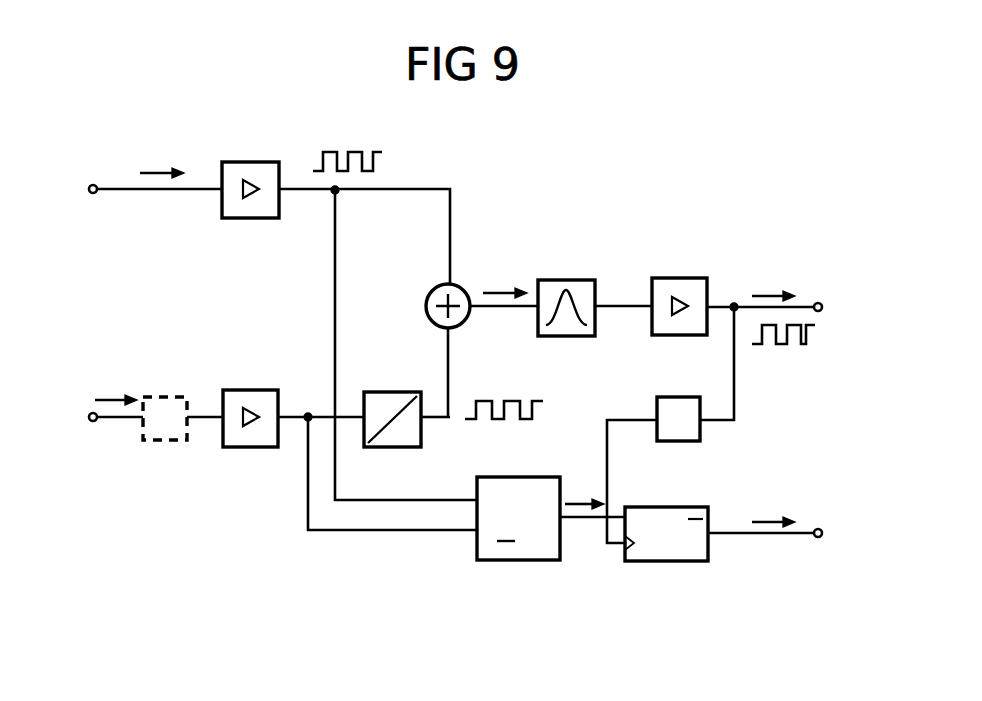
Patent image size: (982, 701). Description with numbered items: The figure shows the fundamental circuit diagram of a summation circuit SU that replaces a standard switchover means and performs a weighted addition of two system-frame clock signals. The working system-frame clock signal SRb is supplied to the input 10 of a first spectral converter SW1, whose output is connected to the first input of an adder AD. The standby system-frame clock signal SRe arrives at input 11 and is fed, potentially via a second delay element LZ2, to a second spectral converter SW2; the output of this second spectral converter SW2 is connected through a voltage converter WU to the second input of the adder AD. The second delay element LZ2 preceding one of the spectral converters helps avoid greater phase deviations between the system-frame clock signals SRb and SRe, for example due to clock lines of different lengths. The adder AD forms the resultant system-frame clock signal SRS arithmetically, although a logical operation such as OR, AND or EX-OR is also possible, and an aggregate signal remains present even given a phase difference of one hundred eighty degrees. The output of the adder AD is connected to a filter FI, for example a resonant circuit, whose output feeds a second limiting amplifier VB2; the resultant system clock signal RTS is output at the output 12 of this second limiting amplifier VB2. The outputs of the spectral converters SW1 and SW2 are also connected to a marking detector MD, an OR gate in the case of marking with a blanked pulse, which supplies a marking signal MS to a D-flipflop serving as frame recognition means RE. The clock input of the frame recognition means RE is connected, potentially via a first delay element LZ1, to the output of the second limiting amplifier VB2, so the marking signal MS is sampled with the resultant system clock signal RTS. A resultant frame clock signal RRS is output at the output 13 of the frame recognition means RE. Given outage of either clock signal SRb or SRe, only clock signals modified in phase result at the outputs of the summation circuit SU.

The input 10 is at (142, 191).
The input terminal for SRe signal 11 is at (100, 419).
The output 12 is at (832, 309).
The output 13 is at (832, 536).
The working system-frame clock signal SRb is at (162, 157).
The standby system-frame clock signal SRe is at (116, 384).
The first spectral converter SW1 is at (217, 246).
The second spectral converter SW2 is at (195, 487).
The summation circuit SU is at (616, 181).
The adder AD is at (431, 350).
The resultant system-frame clock signal SRS is at (504, 282).
The filter FI is at (597, 238).
The second limiting amplifier VB2 is at (731, 235).
The resultant system clock signal RTS is at (783, 303).
The second delay element LZ2 is at (178, 355).
The first delay element LZ1 is at (728, 455).
The voltage converter WU is at (427, 458).
The marking detector MD is at (487, 578).
The marking signal MS is at (592, 495).
The frame recognition means RE is at (698, 580).
The resultant frame clock signal RRS is at (761, 512).